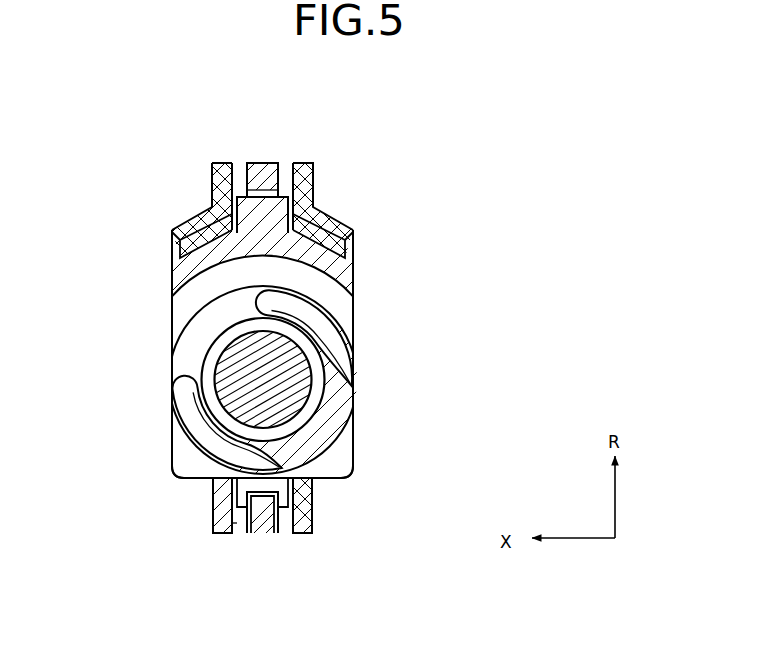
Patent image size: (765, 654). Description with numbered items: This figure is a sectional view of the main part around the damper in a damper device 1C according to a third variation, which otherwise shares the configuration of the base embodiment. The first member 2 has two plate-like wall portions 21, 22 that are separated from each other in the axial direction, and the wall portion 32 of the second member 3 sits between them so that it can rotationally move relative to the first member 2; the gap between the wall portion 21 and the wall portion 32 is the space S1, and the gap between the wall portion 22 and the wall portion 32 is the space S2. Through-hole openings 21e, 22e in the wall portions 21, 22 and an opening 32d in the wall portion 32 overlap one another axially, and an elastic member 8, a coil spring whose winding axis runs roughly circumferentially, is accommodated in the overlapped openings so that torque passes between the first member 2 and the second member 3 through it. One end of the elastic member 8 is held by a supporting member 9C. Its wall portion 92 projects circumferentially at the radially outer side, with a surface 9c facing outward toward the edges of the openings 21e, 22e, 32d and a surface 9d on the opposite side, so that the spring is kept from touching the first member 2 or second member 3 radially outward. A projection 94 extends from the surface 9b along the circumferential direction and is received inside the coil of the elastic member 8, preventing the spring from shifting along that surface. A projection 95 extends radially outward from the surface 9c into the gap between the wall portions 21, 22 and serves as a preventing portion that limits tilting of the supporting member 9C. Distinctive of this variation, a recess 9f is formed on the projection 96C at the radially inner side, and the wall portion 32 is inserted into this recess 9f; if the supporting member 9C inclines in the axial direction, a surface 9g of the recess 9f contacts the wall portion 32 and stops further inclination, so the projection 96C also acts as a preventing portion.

The damper device 1C is at (421, 204).
The first member 2 is at (362, 309).
The second member 3 is at (327, 367).
The elastic member 8 is at (357, 372).
The surface 9b is at (317, 292).
The surface 9c is at (338, 226).
The supporting member 9C is at (357, 445).
The surface 9d is at (194, 284).
The recess 9f is at (281, 517).
The surface 9g is at (255, 534).
The wall portion 21 is at (219, 164).
The opening 21e is at (172, 236).
The wall portion 22 is at (302, 160).
The opening 22e is at (351, 247).
The wall portion 32 is at (261, 162).
The opening 32d is at (300, 188).
The wall portion 92 is at (195, 268).
The projection 94 is at (279, 366).
The projection 95 is at (218, 186).
The projection 96C is at (231, 493).
The space S1 is at (236, 523).
The space S2 is at (290, 518).